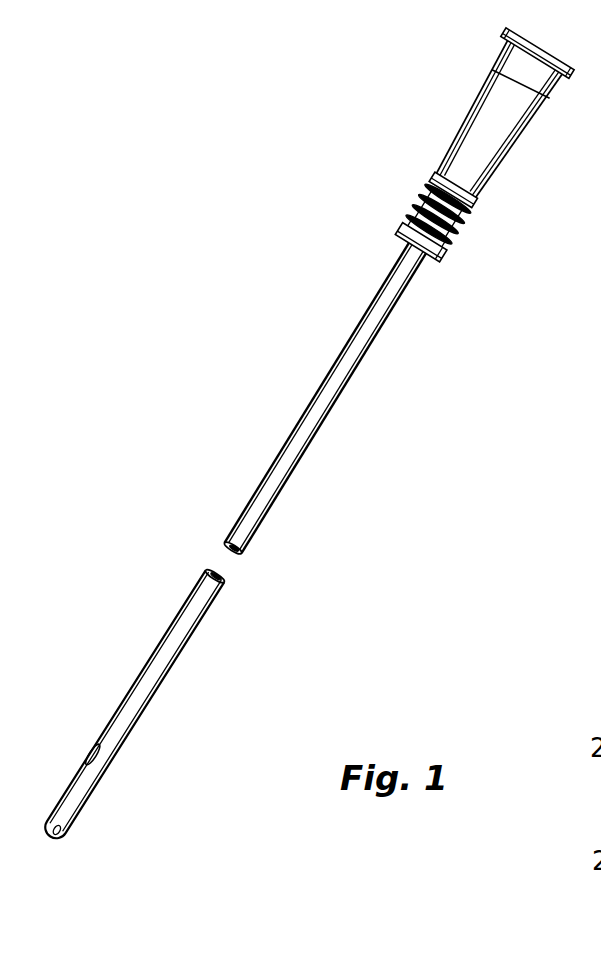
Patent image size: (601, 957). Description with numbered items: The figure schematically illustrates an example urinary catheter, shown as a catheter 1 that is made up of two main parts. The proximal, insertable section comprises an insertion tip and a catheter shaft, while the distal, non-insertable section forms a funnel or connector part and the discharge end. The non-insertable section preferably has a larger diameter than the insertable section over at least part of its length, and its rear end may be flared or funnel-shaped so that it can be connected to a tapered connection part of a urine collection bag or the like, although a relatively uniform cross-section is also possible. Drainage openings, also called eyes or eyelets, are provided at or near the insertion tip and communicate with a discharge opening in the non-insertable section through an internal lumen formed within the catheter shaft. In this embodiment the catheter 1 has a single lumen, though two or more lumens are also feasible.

The catheter 1 is at (289, 419).